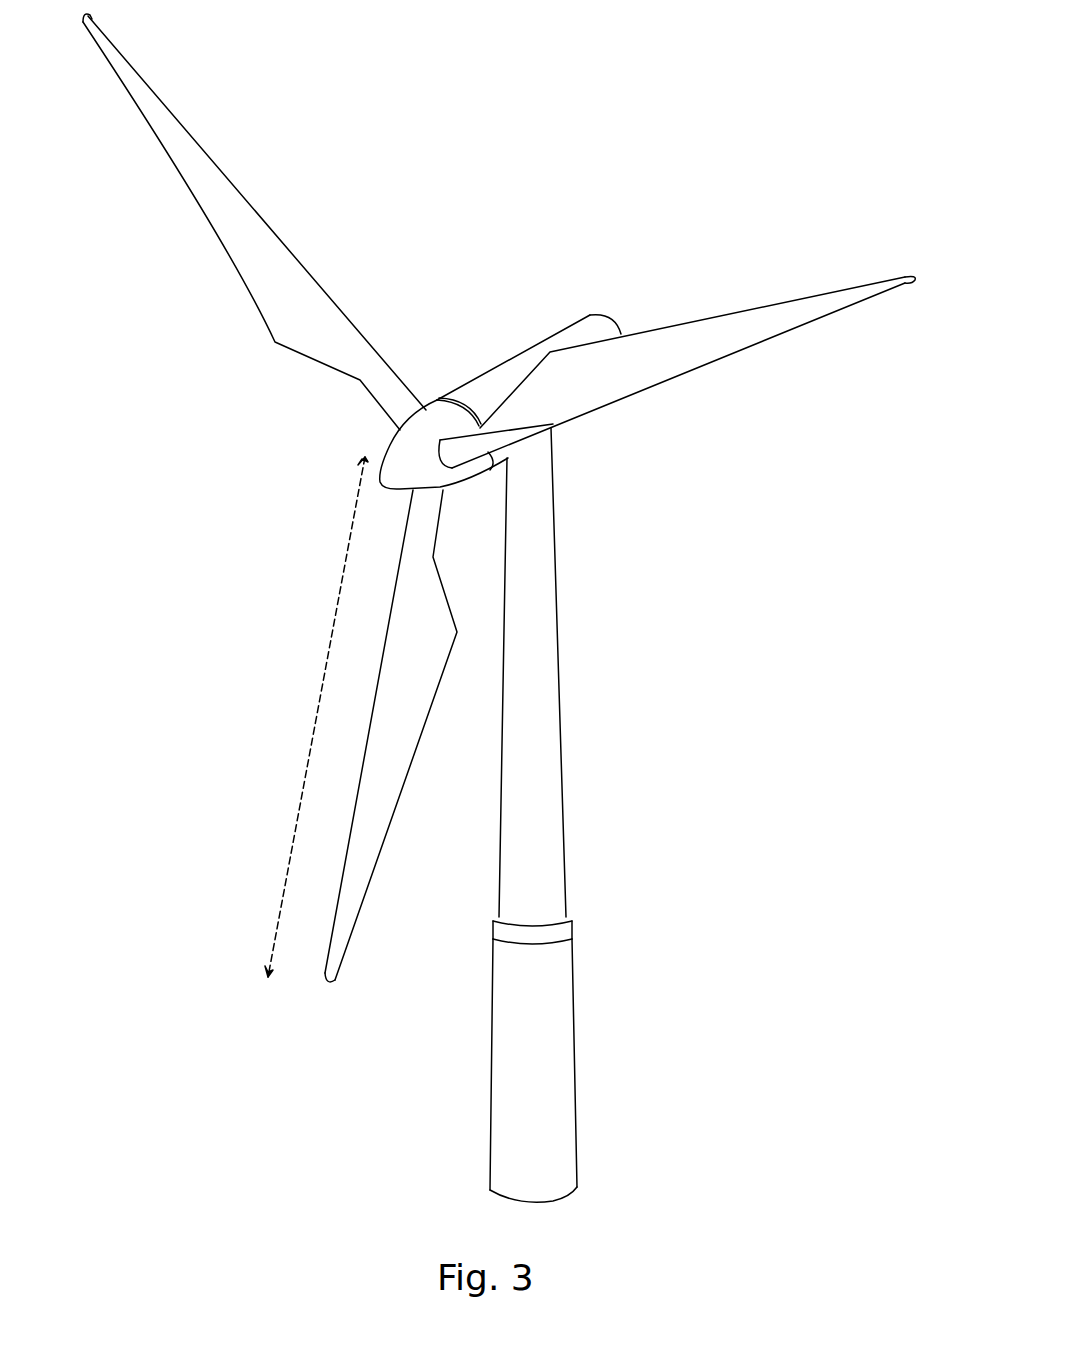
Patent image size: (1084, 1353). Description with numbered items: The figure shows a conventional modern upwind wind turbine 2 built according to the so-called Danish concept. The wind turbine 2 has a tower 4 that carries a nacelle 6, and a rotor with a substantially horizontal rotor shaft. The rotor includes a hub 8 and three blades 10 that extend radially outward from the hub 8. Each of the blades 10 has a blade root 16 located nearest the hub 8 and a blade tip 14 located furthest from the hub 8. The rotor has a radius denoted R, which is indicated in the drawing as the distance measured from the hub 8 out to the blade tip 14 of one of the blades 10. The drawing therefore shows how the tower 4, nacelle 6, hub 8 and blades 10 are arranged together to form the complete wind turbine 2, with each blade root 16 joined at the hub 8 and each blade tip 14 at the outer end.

The wind turbine 2 is at (499, 608).
The tower 4 is at (545, 675).
The nacelle 6 is at (482, 378).
The hub 8 is at (398, 457).
The blades 10 is at (288, 315).
The blade tip 14 is at (130, 73).
The blade root 16 is at (398, 428).